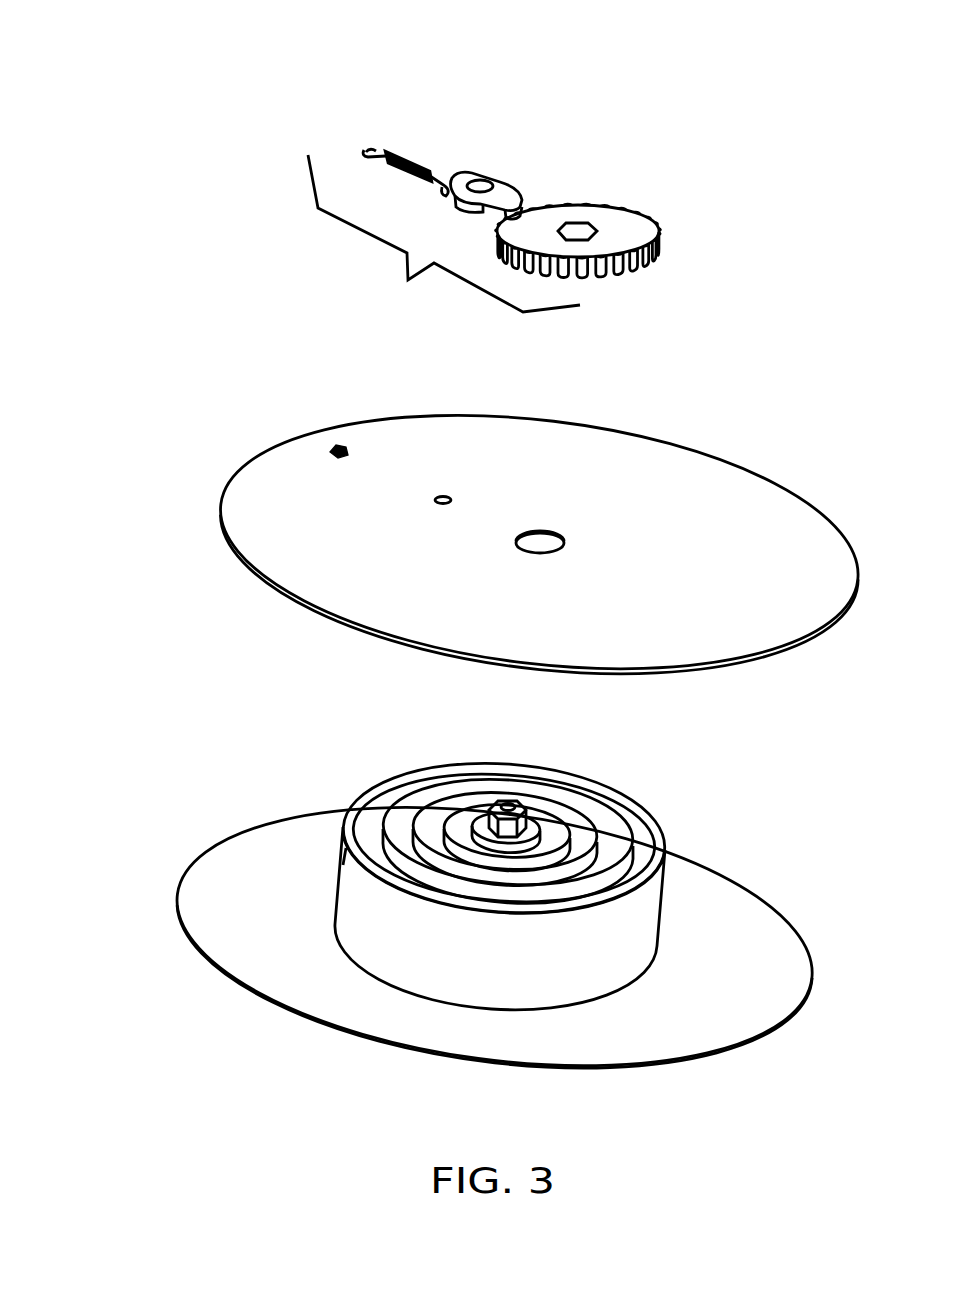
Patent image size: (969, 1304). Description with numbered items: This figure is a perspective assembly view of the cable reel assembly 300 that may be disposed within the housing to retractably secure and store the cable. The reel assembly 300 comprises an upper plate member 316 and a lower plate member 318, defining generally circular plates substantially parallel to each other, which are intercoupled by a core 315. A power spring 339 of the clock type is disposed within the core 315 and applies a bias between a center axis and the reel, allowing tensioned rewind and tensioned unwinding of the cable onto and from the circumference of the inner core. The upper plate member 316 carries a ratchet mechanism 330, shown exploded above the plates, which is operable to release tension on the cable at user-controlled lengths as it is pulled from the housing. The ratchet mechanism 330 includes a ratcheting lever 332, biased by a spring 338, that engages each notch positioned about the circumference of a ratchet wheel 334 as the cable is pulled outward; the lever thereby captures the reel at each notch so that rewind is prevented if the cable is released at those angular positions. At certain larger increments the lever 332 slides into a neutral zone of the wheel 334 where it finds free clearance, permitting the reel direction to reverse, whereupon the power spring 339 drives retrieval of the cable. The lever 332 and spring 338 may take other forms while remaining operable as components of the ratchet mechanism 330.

The reel assembly 300 is at (208, 127).
The ratchet mechanism 330 is at (575, 170).
The spring 338 is at (408, 157).
The ratcheting lever 332 is at (502, 192).
The ratchet wheel 334 is at (633, 232).
The upper plate member 316 is at (733, 551).
The lower plate member 318 is at (757, 976).
The core 315 is at (540, 968).
The power spring 339 is at (383, 802).